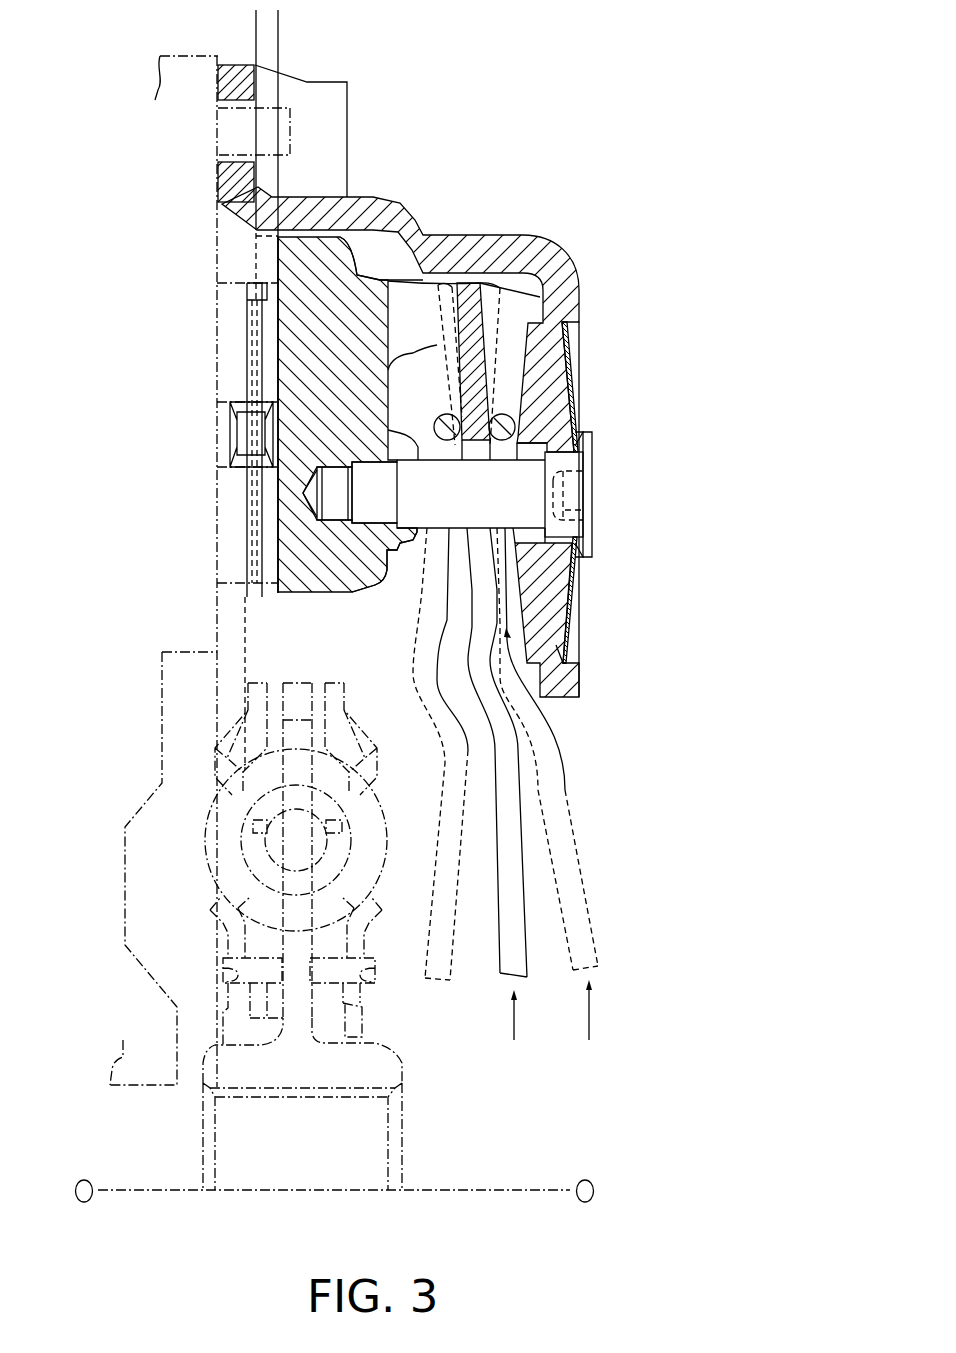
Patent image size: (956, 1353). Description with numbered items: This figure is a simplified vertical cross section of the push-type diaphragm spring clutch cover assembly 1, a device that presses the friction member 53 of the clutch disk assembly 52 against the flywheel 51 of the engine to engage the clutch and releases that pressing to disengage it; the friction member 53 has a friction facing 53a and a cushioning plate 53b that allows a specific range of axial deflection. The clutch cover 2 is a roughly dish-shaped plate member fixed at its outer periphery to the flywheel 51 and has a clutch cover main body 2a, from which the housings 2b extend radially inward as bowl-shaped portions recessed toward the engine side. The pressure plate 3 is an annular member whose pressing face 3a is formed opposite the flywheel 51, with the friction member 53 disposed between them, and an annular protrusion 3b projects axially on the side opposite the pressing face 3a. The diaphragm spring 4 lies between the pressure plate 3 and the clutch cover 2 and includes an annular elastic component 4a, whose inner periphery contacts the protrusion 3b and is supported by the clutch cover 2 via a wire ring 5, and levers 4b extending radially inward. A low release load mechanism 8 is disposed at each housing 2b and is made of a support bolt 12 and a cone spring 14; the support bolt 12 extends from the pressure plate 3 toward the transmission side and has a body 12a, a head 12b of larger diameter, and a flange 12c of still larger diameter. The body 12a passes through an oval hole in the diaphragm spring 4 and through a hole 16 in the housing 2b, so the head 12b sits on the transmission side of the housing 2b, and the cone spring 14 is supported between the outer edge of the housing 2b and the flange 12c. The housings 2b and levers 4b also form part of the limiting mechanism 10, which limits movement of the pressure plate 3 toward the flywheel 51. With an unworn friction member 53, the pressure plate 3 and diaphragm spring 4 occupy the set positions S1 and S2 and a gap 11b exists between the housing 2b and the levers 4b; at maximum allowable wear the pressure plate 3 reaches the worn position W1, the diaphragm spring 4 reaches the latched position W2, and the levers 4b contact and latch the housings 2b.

The clutch cover assembly 1 is at (626, 143).
The clutch cover 2 is at (437, 413).
The clutch cover main body 2a is at (558, 250).
The housing 2b is at (538, 604).
The pressure plate 3 is at (269, 365).
The pressing face 3a is at (280, 312).
The annular protrusion 3b is at (415, 292).
The diaphragm spring 4 is at (551, 624).
The annular elastic component 4a is at (482, 297).
The lever 4b is at (507, 823).
The wire ring 5 is at (518, 428).
The low release load mechanism 8 is at (518, 501).
The limiting mechanism 10 is at (552, 642).
The gap 11b is at (543, 700).
The support bolt 12 is at (518, 521).
The body 12a is at (427, 518).
The head 12b is at (570, 527).
The flange 12c is at (597, 545).
The cone spring 14 is at (574, 349).
The hole 16 is at (533, 473).
The flywheel 51 is at (218, 542).
The clutch disk assembly 52 is at (195, 737).
The friction member 53 is at (220, 440).
The friction facing 53a is at (228, 357).
The cushioning plate 53b is at (254, 336).
The worn position W1 is at (256, 15).
The set position S1 is at (282, 24).
The set position S2 is at (510, 1035).
The latched position W2 is at (589, 1025).